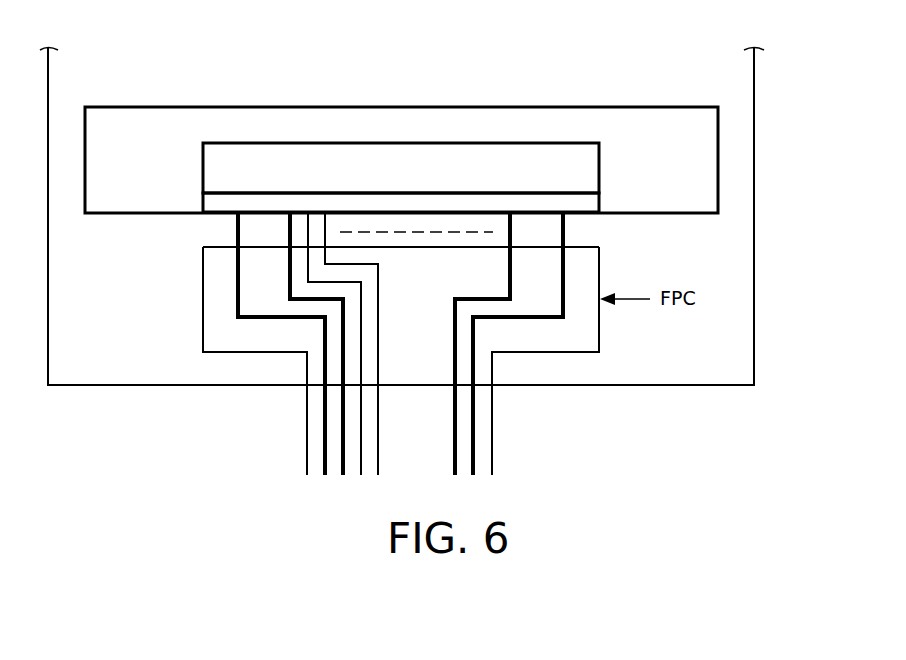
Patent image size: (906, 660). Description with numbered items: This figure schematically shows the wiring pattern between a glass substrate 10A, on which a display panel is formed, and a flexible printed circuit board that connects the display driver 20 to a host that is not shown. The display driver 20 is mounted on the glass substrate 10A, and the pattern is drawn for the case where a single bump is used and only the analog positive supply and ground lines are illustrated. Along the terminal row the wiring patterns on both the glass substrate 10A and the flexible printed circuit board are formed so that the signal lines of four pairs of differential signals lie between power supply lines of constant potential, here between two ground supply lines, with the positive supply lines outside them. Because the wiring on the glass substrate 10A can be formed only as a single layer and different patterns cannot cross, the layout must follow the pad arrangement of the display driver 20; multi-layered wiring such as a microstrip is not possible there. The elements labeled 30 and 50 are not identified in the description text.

The glass substrate 10A is at (754, 312).
The display driver 20 is at (720, 157).
The terminal portion 30 is at (600, 205).
The driver IC 50 is at (487, 141).